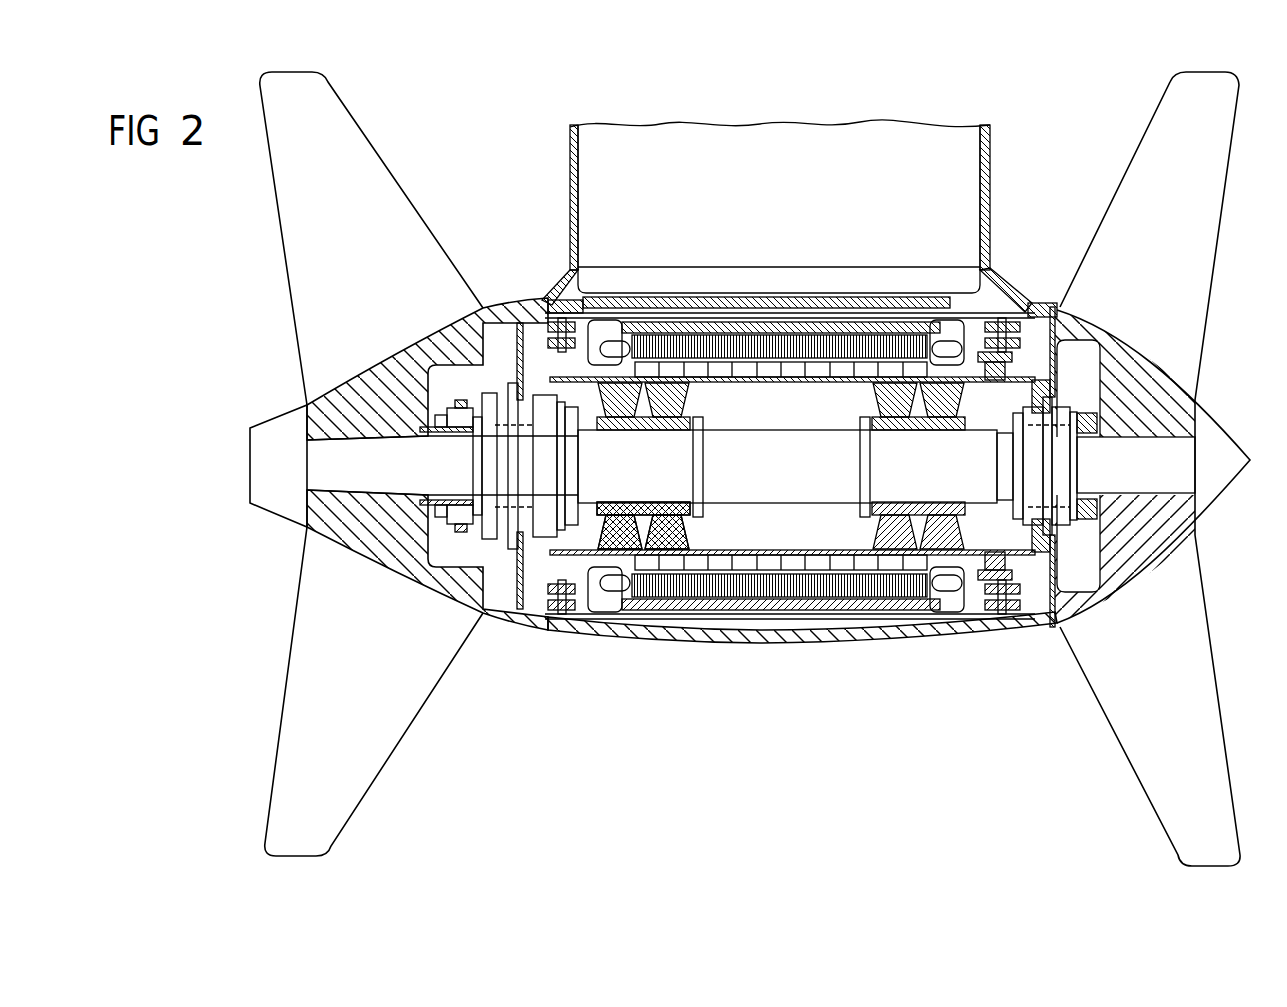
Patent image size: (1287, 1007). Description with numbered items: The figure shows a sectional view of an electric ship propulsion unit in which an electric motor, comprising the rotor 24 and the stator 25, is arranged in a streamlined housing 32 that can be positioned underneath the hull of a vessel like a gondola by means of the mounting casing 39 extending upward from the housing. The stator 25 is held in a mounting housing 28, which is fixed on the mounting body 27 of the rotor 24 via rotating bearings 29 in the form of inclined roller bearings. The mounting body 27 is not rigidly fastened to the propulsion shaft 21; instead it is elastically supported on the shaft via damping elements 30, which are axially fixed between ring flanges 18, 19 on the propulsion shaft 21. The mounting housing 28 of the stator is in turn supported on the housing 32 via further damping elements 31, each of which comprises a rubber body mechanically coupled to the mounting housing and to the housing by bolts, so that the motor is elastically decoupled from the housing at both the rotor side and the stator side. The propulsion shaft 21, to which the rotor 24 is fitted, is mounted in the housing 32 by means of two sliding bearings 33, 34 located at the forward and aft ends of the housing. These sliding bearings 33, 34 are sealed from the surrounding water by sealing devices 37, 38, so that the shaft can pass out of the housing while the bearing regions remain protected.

The ring flange 18 is at (683, 385).
The ring flange 19 is at (697, 451).
The propulsion shaft 21 is at (777, 494).
The rotor 24 is at (745, 370).
The stator 25 is at (730, 350).
The mounting body 27 is at (813, 383).
The mounting housing 28 is at (842, 328).
The rotating bearings 29 is at (1002, 370).
The damping elements 30 is at (690, 517).
The damping elements 31 is at (557, 612).
The housing 32 is at (771, 644).
The sliding bearing 33 is at (533, 392).
The sliding bearing 34 is at (1060, 450).
The sealing device 37 is at (452, 527).
The sealing device 38 is at (1093, 507).
The mounting casing 39 is at (987, 180).